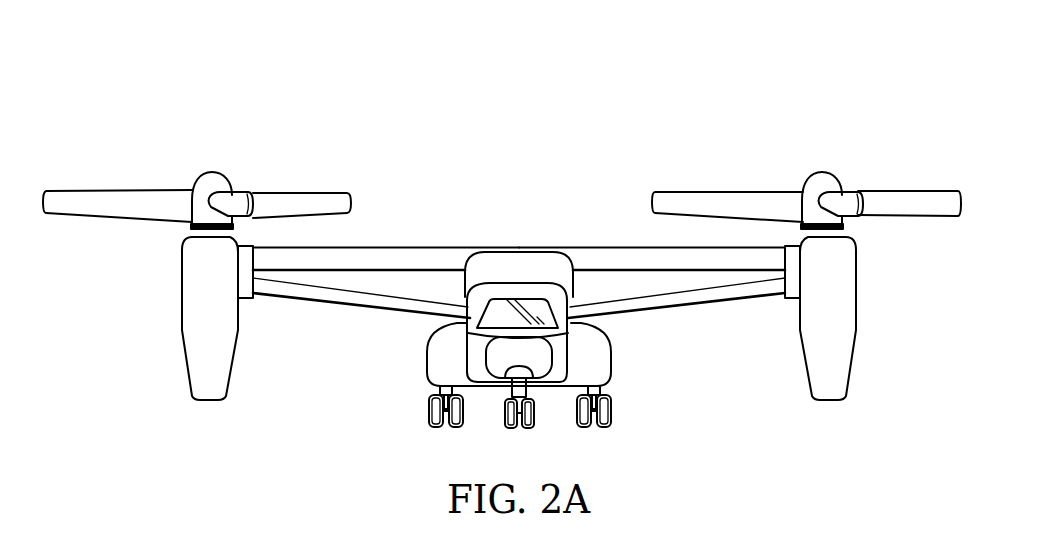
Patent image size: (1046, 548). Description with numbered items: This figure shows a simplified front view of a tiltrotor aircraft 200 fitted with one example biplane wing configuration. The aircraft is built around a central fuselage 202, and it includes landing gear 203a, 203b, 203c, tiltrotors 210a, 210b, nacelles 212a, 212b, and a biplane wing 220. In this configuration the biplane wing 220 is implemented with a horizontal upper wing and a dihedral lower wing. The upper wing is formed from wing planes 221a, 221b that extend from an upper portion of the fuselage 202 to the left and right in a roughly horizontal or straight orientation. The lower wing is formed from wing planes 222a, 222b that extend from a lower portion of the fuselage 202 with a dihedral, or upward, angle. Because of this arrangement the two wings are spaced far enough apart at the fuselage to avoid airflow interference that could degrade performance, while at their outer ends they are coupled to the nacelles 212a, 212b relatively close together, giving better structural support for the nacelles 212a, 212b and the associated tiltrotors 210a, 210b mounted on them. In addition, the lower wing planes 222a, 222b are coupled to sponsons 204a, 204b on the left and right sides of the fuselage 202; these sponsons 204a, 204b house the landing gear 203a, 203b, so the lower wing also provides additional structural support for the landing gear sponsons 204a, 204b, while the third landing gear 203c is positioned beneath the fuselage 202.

The tiltrotor aircraft 200 is at (226, 62).
The fuselage 202 is at (513, 290).
The landing gear 203a is at (610, 410).
The landing gear 203b is at (430, 410).
The landing gear 203c is at (503, 422).
The sponson 204a is at (613, 360).
The sponson 204b is at (427, 360).
The tiltrotor 210a is at (839, 161).
The tiltrotor 210b is at (199, 159).
The nacelle 212a is at (857, 330).
The nacelle 212b is at (182, 333).
The biplane wing 220 is at (482, 191).
The wing plane 221a is at (628, 248).
The wing plane 221b is at (398, 248).
The wing plane 222a is at (736, 303).
The wing plane 222b is at (302, 303).